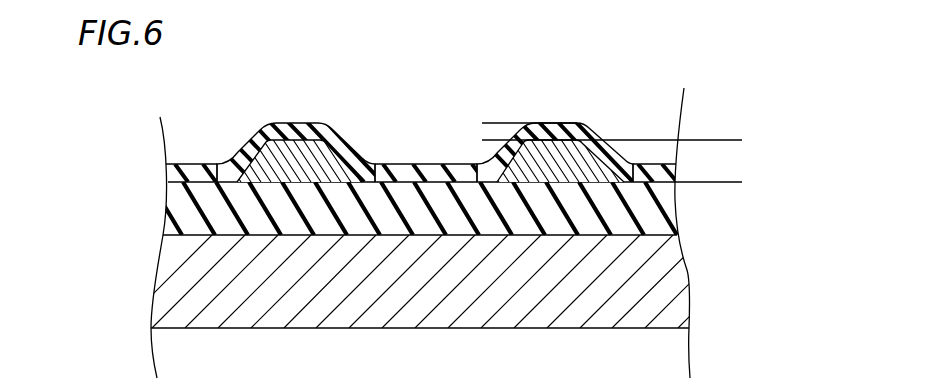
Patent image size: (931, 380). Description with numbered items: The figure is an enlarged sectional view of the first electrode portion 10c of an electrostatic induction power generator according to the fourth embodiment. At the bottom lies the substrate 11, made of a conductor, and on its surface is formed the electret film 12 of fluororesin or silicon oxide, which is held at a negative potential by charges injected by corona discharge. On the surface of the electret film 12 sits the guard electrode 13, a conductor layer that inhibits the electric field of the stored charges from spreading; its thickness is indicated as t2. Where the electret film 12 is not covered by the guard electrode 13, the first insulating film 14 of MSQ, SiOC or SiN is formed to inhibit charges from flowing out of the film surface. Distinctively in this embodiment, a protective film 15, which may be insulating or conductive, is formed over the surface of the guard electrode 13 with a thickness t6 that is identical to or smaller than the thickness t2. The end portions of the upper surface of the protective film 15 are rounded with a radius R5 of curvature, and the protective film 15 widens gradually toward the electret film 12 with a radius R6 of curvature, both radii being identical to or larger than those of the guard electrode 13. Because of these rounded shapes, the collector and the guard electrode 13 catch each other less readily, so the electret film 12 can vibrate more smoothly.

The first electrode portion 10c is at (667, 83).
The substrate 11 is at (168, 289).
The electret film 12 is at (172, 208).
The guard electrode 13 is at (301, 148).
The first insulating film 14 is at (182, 162).
The protective film 15 is at (336, 150).
The radius of curvature R5 is at (277, 107).
The radius of curvature R6 is at (237, 137).
The thickness t6 is at (493, 110).
The thickness t2 is at (698, 140).